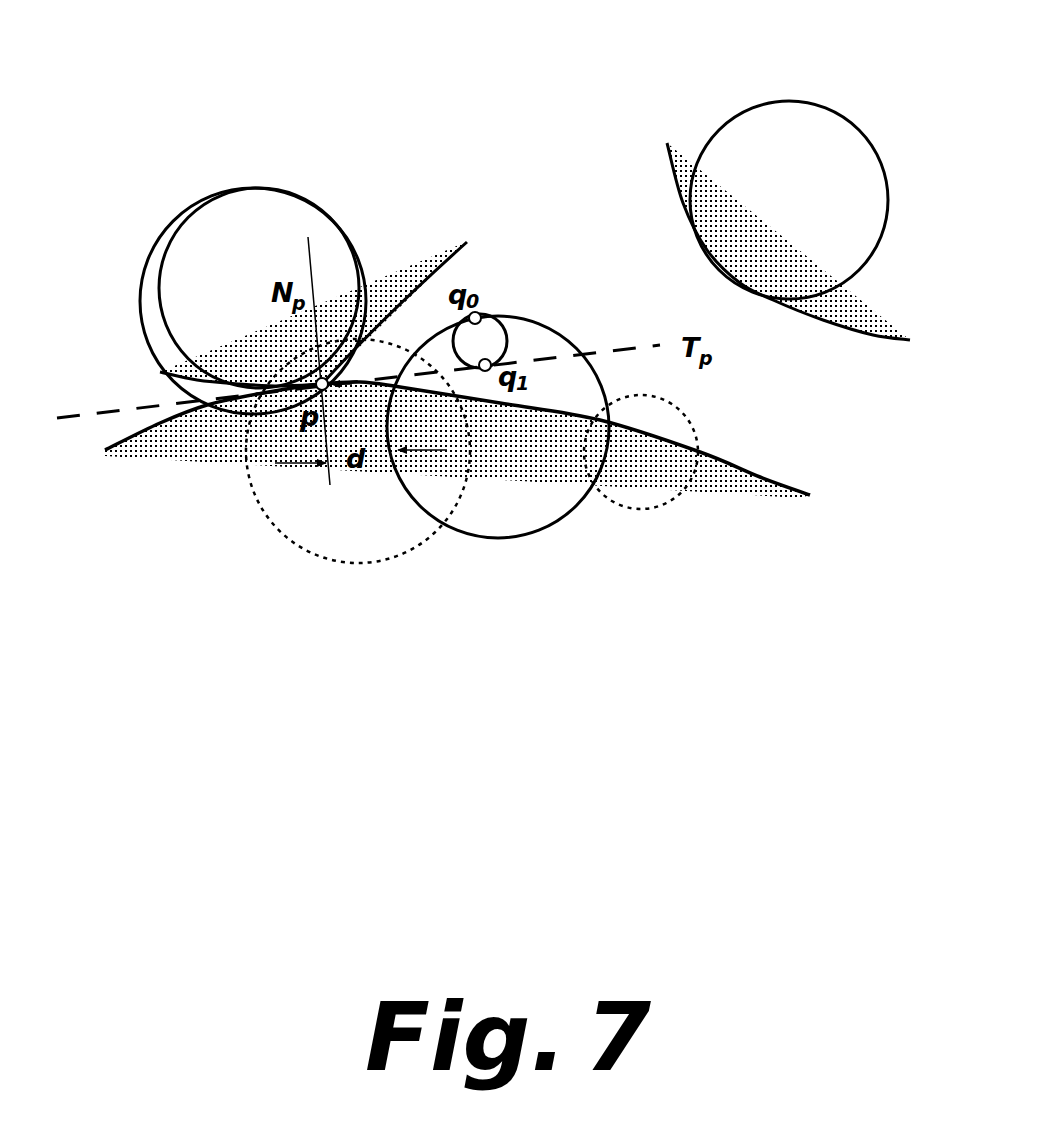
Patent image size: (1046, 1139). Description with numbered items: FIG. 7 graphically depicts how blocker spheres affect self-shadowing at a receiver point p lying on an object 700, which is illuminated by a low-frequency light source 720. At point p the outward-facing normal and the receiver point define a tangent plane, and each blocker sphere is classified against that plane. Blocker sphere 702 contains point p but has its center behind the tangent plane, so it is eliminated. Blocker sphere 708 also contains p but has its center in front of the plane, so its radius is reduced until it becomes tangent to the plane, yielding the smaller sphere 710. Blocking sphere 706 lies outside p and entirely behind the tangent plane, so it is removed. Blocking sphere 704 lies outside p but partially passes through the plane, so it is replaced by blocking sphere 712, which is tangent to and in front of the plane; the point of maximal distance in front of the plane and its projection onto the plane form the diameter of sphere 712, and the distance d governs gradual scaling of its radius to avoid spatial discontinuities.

The object 700 is at (762, 488).
The blocker sphere 702 is at (320, 560).
The blocking sphere 704 is at (517, 538).
The blocking sphere 706 is at (648, 510).
The blocker sphere 708 is at (155, 243).
The reduced sphere 710 is at (227, 192).
The blocking sphere 712 is at (493, 317).
The low-frequency light source 720 is at (748, 105).